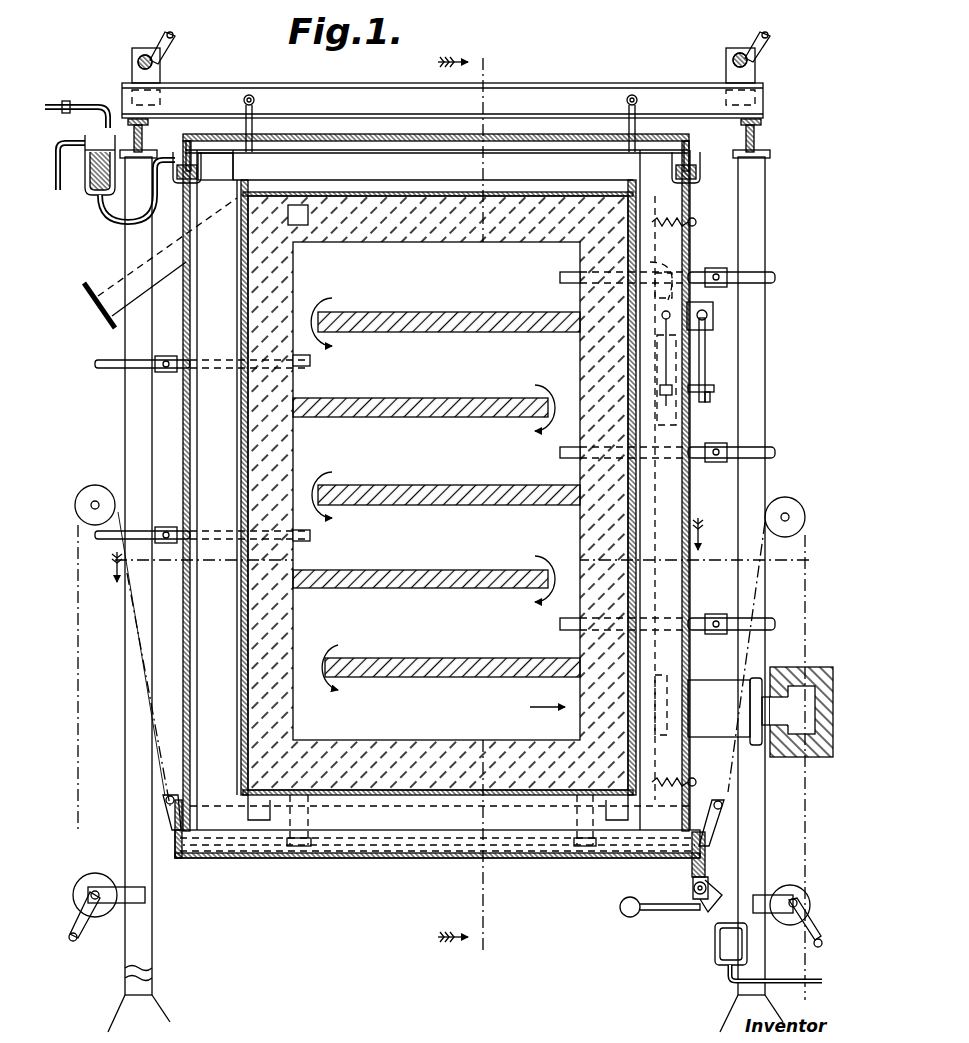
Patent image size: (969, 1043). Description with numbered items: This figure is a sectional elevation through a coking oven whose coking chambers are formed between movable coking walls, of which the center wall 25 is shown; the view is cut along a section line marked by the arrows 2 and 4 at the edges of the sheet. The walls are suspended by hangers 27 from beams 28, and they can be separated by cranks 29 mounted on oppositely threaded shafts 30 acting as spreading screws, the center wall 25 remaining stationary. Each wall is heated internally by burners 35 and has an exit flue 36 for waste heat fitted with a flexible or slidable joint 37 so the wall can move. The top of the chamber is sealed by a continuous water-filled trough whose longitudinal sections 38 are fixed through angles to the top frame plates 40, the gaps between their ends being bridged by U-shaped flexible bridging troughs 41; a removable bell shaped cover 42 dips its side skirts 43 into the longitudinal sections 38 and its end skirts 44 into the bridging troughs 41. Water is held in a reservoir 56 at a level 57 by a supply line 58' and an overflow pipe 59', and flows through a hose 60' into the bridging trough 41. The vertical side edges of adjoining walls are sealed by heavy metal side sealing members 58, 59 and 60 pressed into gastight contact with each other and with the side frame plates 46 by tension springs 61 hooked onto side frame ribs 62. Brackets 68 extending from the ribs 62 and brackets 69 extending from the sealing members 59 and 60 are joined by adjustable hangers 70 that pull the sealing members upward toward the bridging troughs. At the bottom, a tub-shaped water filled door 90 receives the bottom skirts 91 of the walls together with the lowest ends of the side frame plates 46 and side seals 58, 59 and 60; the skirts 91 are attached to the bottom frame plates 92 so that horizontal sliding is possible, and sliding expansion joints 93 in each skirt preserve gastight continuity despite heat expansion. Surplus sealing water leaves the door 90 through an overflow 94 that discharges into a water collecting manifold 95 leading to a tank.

The section line 2- 2 is at (451, 550).
The section line 4- 4 is at (461, 505).
The center coking wall 25 is at (294, 455).
The hanger 27 is at (253, 128).
The beam 28 is at (375, 96).
The crank 29 is at (170, 46).
The shaft 30 is at (131, 60).
The burner 35 is at (312, 361).
The exit flue 36 is at (705, 680).
The flexible or slidable joint 37 is at (752, 708).
The longitudinal trough section 38 is at (463, 172).
The top frame plate 40 is at (342, 192).
The bridging trough 41 is at (181, 152).
The bell shaped cover 42 is at (410, 134).
The side skirt 43 is at (546, 147).
The end skirt 44 is at (192, 158).
The side frame plate 46 is at (244, 482).
The reservoir 56 is at (100, 205).
The water level 57 is at (90, 182).
The side sealing member 58 is at (438, 463).
The supply line 58' is at (403, 111).
The side sealing member 59 is at (445, 648).
The overflow pipe 59' is at (68, 151).
The side sealing member 60 is at (445, 586).
The hose 60' is at (158, 263).
The tension spring 61 is at (694, 221).
The side frame rib 62 is at (680, 258).
The bracket 68 is at (714, 312).
The bracket 69 is at (715, 388).
The adjustable hanger 70 is at (706, 346).
The tub-shaped water filled door 90 is at (386, 857).
The bottom skirt 91 is at (455, 818).
The bottom frame plate 92 is at (551, 795).
The sliding expansion joint 93 is at (298, 858).
The overflow 94 is at (710, 849).
The water collecting manifold 95 is at (715, 952).